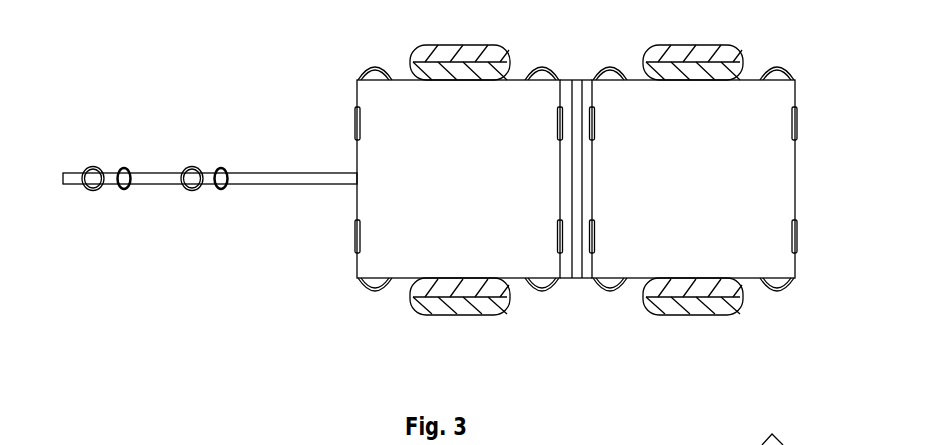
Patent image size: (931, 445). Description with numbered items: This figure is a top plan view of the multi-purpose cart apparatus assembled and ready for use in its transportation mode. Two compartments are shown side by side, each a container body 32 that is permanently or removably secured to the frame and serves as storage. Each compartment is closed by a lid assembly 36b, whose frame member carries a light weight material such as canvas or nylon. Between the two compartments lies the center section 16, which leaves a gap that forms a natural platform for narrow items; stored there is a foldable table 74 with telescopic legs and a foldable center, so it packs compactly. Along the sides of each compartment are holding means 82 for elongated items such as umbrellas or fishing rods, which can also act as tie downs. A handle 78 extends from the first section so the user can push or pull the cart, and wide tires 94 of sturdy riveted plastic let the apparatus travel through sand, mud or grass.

The center section 16 is at (587, 275).
The container body 32 is at (357, 202).
The lid assembly 36b is at (508, 263).
The foldable table 74 is at (582, 189).
The handle 78 is at (288, 172).
The holding means 82 is at (373, 287).
The tires 94 is at (473, 312).